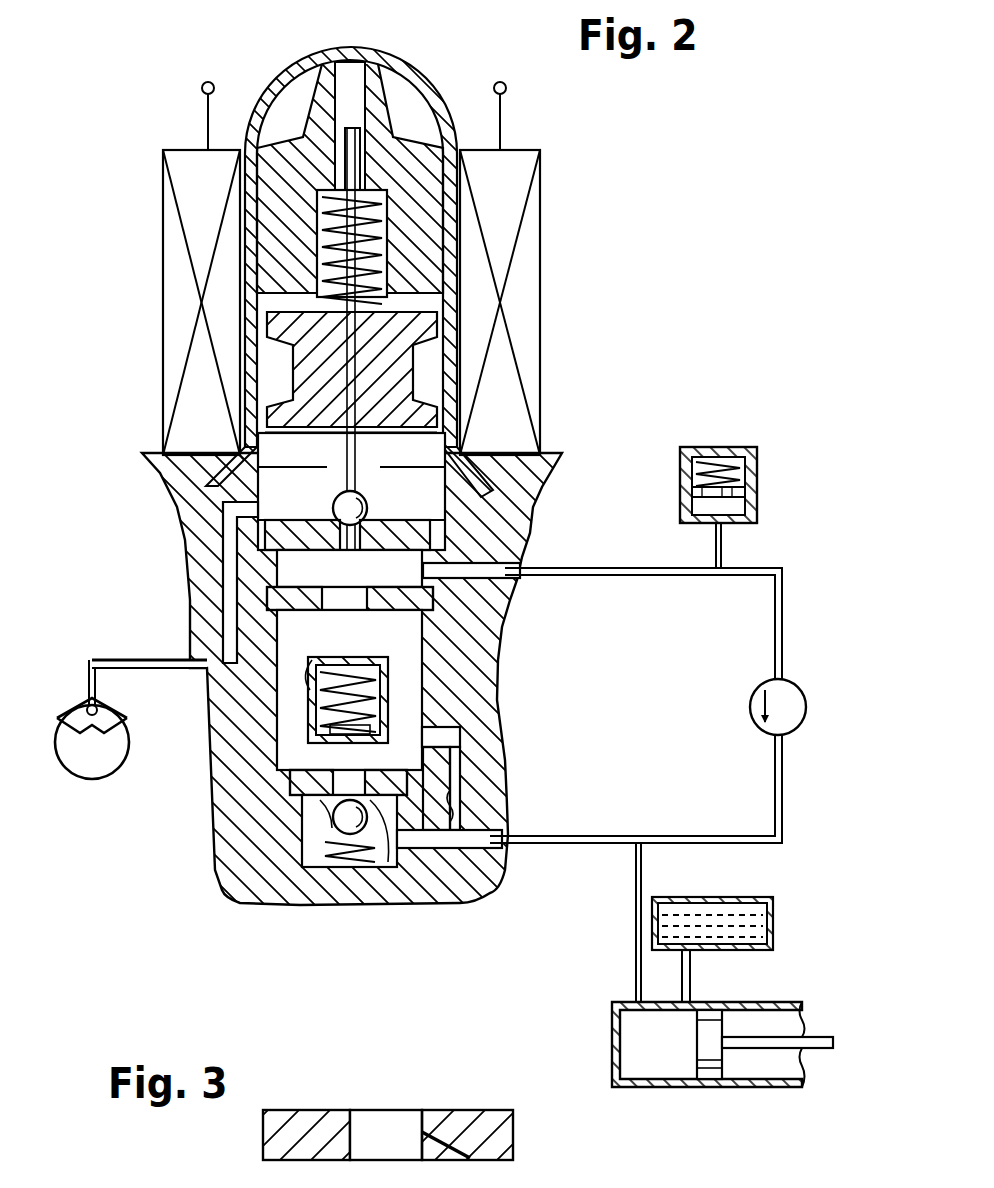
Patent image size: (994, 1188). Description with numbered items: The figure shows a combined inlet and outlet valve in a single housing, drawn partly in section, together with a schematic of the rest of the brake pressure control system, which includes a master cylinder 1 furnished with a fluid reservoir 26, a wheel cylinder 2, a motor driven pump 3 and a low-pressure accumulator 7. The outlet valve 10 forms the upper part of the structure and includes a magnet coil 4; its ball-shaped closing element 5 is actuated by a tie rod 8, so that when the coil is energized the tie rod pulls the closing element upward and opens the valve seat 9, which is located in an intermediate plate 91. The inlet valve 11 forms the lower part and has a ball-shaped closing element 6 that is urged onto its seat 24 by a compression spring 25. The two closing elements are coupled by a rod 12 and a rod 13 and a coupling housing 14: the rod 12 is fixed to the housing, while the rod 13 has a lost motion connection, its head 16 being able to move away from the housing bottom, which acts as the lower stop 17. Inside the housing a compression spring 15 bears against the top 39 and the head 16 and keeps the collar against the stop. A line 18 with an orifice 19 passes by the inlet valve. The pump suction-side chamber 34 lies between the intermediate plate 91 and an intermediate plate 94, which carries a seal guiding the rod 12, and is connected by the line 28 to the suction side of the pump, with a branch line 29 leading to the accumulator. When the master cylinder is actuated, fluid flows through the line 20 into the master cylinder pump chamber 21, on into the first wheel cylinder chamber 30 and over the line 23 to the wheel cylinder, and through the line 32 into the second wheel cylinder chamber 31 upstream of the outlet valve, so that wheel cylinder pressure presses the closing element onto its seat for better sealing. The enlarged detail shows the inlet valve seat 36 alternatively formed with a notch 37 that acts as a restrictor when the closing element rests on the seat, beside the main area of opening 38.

In FIG. 2, the master cylinder 1 is at (790, 1002).
In FIG. 2, the wheel cylinder 2 is at (88, 705).
In FIG. 2, the motor driven pump 3 is at (803, 707).
In FIG. 2, the magnet coil 4 is at (527, 222).
In FIG. 2, the closing element 5 is at (447, 500).
In FIG. 2, the closing element 6 is at (333, 823).
In FIG. 2, the low-pressure accumulator 7 is at (757, 487).
In FIG. 2, the tie rod 8 is at (350, 390).
In FIG. 2, the valve seat 9 is at (300, 558).
In FIG. 2, the outlet valve 10 is at (325, 506).
In FIG. 2, the inlet valve 11 is at (380, 865).
In FIG. 2, the rod 12 is at (350, 630).
In FIG. 2, the rod 13 is at (455, 760).
In FIG. 2, the coupling housing 14 is at (380, 722).
In FIG. 2, the compression spring 15 is at (330, 670).
In FIG. 2, the head 16 is at (373, 735).
In FIG. 2, the lower stop 17 is at (340, 745).
In FIG. 2, the line 18 is at (448, 740).
In FIG. 2, the orifice 19 is at (467, 807).
In FIG. 2, the line 20 is at (636, 905).
In FIG. 2, the master cylinder pump chamber 21 is at (315, 850).
In FIG. 2, the line 23 is at (120, 662).
In FIG. 2, the seat 24 is at (330, 805).
In FIG. 2, the compression spring 25 is at (350, 850).
In FIG. 2, the fluid reservoir 26 is at (773, 920).
In FIG. 2, the line 28 is at (778, 640).
In FIG. 2, the branch line 29 is at (721, 548).
In FIG. 2, the first wheel cylinder chamber 30 is at (397, 630).
In FIG. 2, the second wheel cylinder chamber 31 is at (413, 460).
In FIG. 2, the line 32 is at (240, 528).
In FIG. 2, the pump suction-side chamber 34 is at (300, 578).
In FIG. 3, the valve seat 36 is at (343, 1105).
In FIG. 3, the notch 37 is at (440, 1150).
In FIG. 3, the main area of opening 38 is at (388, 1125).
In FIG. 2, the top 39 is at (385, 660).
In FIG. 2, the intermediate plate 91 is at (430, 560).
In FIG. 2, the intermediate plate 94 is at (440, 598).